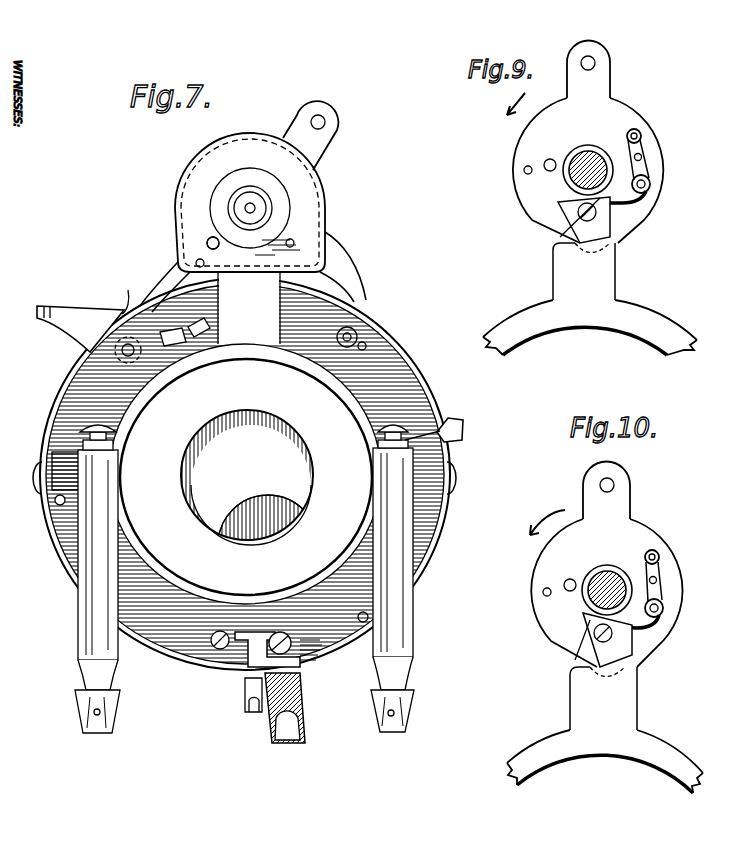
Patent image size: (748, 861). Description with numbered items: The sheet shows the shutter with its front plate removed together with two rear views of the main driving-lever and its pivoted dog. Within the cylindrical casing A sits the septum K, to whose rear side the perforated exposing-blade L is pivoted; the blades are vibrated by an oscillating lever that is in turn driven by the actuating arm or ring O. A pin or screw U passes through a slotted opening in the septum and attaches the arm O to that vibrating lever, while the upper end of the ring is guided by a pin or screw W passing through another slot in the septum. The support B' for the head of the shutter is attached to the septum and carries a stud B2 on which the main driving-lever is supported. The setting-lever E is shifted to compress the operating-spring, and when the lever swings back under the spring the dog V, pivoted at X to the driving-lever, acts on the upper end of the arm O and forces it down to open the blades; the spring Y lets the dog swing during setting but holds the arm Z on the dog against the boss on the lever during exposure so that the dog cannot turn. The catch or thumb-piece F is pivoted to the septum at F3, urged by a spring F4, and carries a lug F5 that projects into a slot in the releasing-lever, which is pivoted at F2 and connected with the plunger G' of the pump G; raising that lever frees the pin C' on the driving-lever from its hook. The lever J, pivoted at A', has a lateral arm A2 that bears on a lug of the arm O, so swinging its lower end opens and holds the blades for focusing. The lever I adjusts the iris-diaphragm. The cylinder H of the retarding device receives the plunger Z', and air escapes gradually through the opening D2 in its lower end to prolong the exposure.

In FIG. 7, the cylindrical casing A is at (244, 474).
In FIG. 7, the pivot of lever J A' is at (296, 637).
In FIG. 7, the lateral arm A2 is at (274, 637).
In FIG. 7, the support for the head of the shutter B' is at (253, 222).
In FIG. 7, the stud B2 is at (262, 205).
In FIG. 9, the stud B2 is at (583, 160).
In FIG. 10, the stud B2 is at (603, 578).
In FIG. 7, the pin C' is at (157, 289).
In FIG. 7, the opening D2 is at (395, 713).
In FIG. 7, the setting-lever E is at (332, 117).
In FIG. 9, the setting-lever E is at (600, 63).
In FIG. 10, the setting-lever E is at (618, 480).
In FIG. 7, the catch or thumb-piece F is at (80, 317).
In FIG. 7, the pivot of releasing-lever F2 is at (207, 243).
In FIG. 7, the pivot of thumb-piece F3 is at (185, 332).
In FIG. 7, the spring F4 is at (120, 291).
In FIG. 7, the lug F5 is at (115, 352).
In FIG. 7, the pump G is at (112, 715).
In FIG. 7, the plunger G' is at (69, 571).
In FIG. 7, the cylinder of the retarding device H is at (413, 651).
In FIG. 7, the lever for adjusting the iris-diaphragm I is at (466, 428).
In FIG. 7, the lever J is at (245, 690).
In FIG. 7, the septum K is at (246, 477).
In FIG. 7, the perforated exposing-blade L is at (249, 502).
In FIG. 7, the actuating arm or ring O is at (170, 379).
In FIG. 9, the actuating arm or ring O is at (650, 326).
In FIG. 10, the actuating arm or ring O is at (662, 762).
In FIG. 7, the pin or screw U is at (214, 633).
In FIG. 9, the dog V is at (598, 212).
In FIG. 10, the dog V is at (613, 637).
In FIG. 7, the pin or screw W is at (249, 314).
In FIG. 9, the pin or screw W is at (584, 278).
In FIG. 10, the pin or screw W is at (604, 703).
In FIG. 9, the pivot of the dog X is at (575, 210).
In FIG. 10, the pivot of the dog X is at (595, 640).
In FIG. 9, the spring Y is at (647, 152).
In FIG. 10, the spring Y is at (662, 597).
In FIG. 9, the arm on the dog Z is at (572, 213).
In FIG. 10, the arm on the dog Z is at (593, 635).
In FIG. 7, the plunger Z' is at (438, 413).